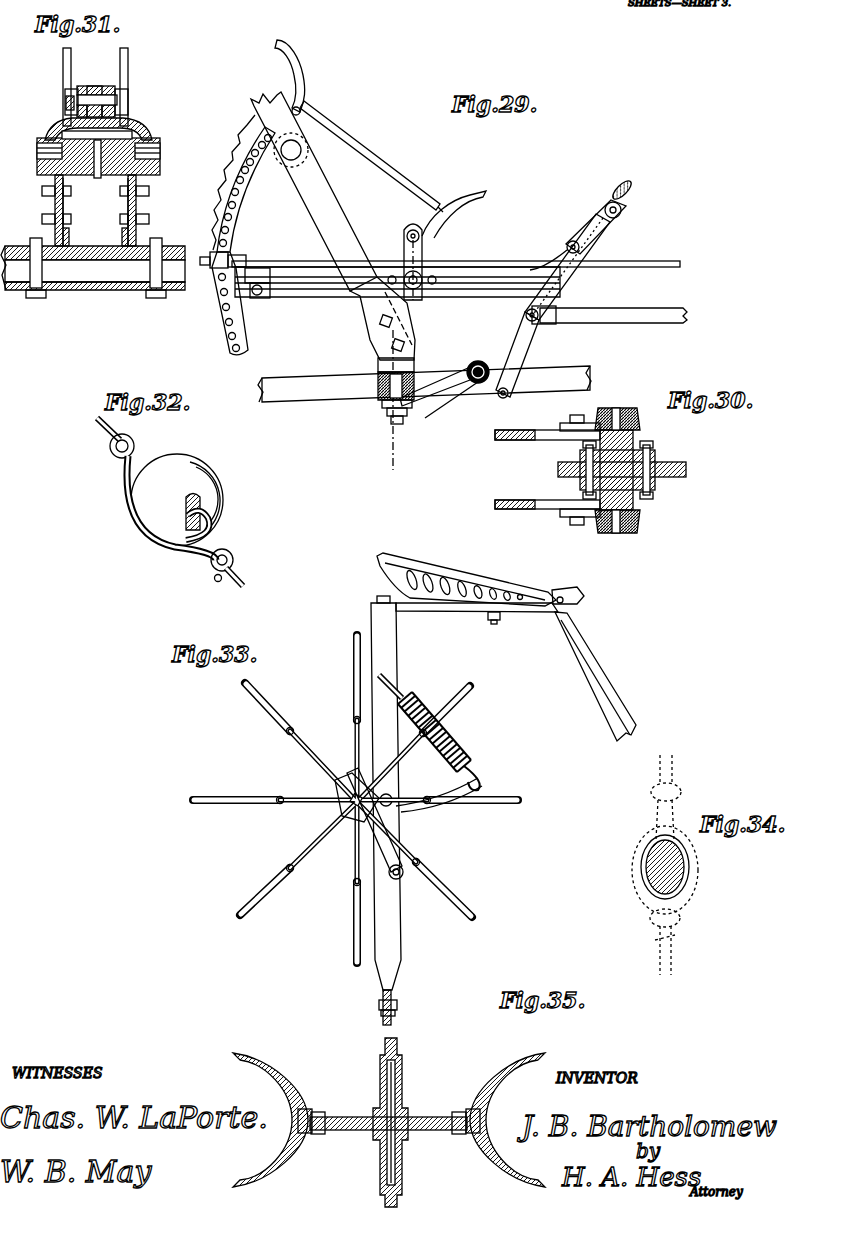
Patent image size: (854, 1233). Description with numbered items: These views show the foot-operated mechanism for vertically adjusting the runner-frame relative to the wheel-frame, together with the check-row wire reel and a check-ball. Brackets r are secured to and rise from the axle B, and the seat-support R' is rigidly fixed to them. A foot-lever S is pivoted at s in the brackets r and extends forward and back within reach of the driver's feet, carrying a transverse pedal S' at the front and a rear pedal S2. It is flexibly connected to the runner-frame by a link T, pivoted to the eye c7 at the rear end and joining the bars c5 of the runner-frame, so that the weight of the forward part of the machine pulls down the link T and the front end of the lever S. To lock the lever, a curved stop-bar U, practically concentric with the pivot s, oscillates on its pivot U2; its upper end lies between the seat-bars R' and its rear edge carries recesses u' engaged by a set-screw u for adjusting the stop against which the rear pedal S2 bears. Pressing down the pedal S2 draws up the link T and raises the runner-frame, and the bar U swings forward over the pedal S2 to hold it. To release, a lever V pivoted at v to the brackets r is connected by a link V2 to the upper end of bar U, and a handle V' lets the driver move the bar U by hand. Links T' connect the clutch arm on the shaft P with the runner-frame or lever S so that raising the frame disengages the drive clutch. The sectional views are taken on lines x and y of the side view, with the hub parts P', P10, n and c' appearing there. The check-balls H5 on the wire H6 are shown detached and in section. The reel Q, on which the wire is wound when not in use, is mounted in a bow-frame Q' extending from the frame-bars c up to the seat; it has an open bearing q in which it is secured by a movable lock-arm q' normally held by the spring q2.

In FIG. 31, the seat-support R' is at (95, 87).
In FIG. 29, the seat-support R' is at (368, 264).
In FIG. 30, the seat-support R' is at (547, 473).
In FIG. 31, the lever V is at (109, 94).
In FIG. 29, the lever V is at (454, 201).
In FIG. 31, the pivot v is at (80, 100).
In FIG. 29, the pivot v is at (401, 229).
In FIG. 31, the pivot s is at (106, 148).
In FIG. 30, the pivot s is at (620, 536).
In FIG. 31, the foot-lever S is at (95, 210).
In FIG. 29, the foot-lever S is at (456, 292).
In FIG. 30, the foot-lever S is at (623, 469).
In FIG. 31, the brackets r is at (44, 202).
In FIG. 29, the brackets r is at (418, 328).
In FIG. 30, the brackets r is at (590, 425).
In FIG. 31, the axle B is at (120, 298).
In FIG. 29, the axle B is at (424, 384).
In FIG. 29, the handle V' is at (299, 77).
In FIG. 29, the link V2 is at (395, 140).
In FIG. 29, the curved stop-bar U is at (230, 158).
In FIG. 29, the recesses u' is at (226, 182).
In FIG. 29, the pivot U2 is at (288, 160).
In FIG. 29, the set-screw u is at (218, 250).
In FIG. 29, the rear pedal S2 is at (250, 270).
In FIG. 29, the section line x x is at (387, 280).
In FIG. 29, the section line y y is at (403, 336).
In FIG. 29, the transverse pedal S' is at (589, 222).
In FIG. 29, the link T is at (567, 267).
In FIG. 29, the links T' is at (513, 353).
In FIG. 29, the bars of the runner-frame c5 is at (613, 303).
In FIG. 29, the eye c7 is at (548, 322).
In FIG. 29, the shaft P is at (475, 359).
In FIG. 29, the arm P' is at (442, 390).
In FIG. 29, the arm P10 is at (416, 425).
In FIG. 29, the frame-bars c is at (310, 365).
In FIG. 30, the nut n is at (594, 526).
In FIG. 32, the check-ball H5 is at (160, 505).
In FIG. 34, the check-ball H5 is at (650, 875).
In FIG. 32, the wire H6 is at (235, 566).
In FIG. 34, the wire H6 is at (672, 948).
In FIG. 33, the bow-frame Q' is at (503, 771).
In FIG. 33, the reel Q is at (355, 799).
In FIG. 35, the reel Q is at (389, 1122).
In FIG. 33, the open bearing q is at (326, 853).
In FIG. 33, the movable lock-arm q' is at (414, 823).
In FIG. 33, the spring q2 is at (430, 732).
In FIG. 33, the point c' is at (377, 1007).